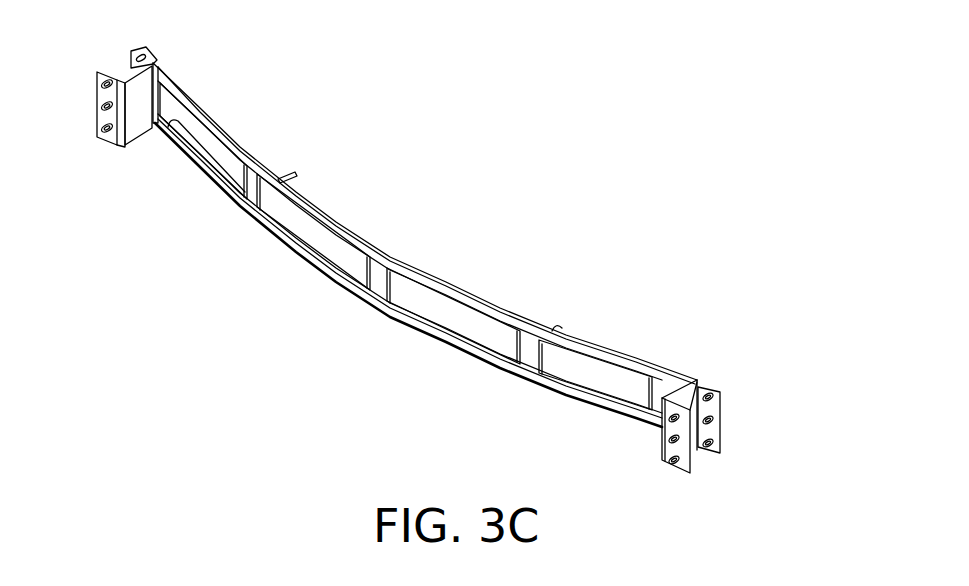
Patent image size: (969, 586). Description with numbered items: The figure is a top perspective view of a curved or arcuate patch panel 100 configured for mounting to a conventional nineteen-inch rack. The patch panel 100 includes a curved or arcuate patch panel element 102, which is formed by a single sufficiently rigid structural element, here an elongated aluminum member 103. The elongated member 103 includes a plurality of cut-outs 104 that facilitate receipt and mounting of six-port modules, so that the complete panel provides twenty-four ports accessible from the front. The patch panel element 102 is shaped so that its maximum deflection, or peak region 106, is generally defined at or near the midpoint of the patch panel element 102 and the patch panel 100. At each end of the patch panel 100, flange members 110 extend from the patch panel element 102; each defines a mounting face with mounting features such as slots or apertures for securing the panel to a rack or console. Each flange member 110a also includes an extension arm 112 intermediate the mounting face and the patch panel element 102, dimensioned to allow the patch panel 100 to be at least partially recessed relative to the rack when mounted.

The patch panel 100 is at (734, 347).
The patch panel element 102 is at (430, 277).
The elongated aluminum member 103 is at (398, 242).
The cut-outs 104 is at (338, 247).
The peak region 106 is at (398, 340).
The flange members 110 is at (143, 60).
The flange member 110a is at (111, 143).
The extension arm 112 is at (140, 125).